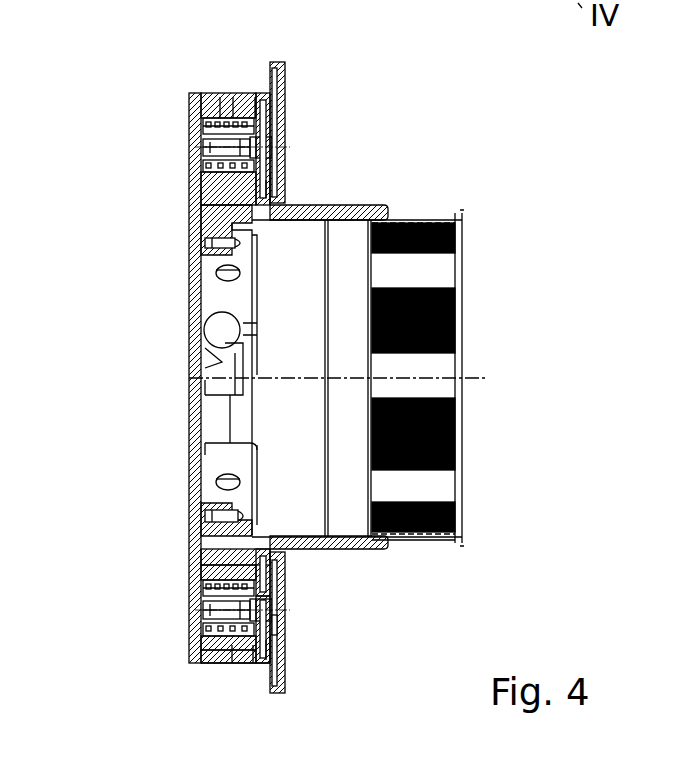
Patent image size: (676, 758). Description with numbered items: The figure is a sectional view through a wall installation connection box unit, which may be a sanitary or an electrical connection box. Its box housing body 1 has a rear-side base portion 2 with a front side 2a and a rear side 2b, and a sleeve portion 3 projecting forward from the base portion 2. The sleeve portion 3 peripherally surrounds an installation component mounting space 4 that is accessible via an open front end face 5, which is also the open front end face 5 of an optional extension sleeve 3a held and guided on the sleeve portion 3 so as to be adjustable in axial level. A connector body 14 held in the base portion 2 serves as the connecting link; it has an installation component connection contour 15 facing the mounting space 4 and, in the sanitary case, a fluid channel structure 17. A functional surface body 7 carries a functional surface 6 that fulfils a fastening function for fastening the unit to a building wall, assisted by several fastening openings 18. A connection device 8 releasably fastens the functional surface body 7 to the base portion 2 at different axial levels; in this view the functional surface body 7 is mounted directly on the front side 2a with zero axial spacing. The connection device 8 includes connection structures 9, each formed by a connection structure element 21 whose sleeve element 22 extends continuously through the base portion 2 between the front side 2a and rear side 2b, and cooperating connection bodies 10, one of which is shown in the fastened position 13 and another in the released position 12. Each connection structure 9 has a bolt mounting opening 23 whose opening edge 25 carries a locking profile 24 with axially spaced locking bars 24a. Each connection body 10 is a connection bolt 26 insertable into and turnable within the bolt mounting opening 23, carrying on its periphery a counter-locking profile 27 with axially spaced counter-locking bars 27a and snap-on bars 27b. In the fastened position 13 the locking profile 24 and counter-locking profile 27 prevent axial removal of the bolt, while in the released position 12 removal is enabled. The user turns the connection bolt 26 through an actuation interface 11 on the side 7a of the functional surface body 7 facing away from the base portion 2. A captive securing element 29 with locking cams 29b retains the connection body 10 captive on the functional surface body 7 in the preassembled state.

The box housing body 1 is at (272, 205).
The base portion 2 is at (190, 97).
The front side 2a is at (283, 650).
The rear side 2b is at (195, 652).
The sleeve portion 3 is at (378, 205).
The extension sleeve 3a is at (423, 537).
The installation component mounting space 4 is at (308, 393).
The open front end face 5 is at (463, 218).
The functional surface 6 is at (287, 100).
The functional surface body 7 is at (283, 655).
The side 7a is at (283, 177).
The connection device 8 is at (197, 180).
The connection structure 9 is at (151, 352).
The connection body 10 is at (230, 378).
The actuation interface 11 is at (282, 138).
The released position 12 is at (205, 665).
The fastened position 13 is at (220, 97).
The connector body 14 is at (213, 222).
The installation component connection contour 15 is at (215, 293).
The fluid channel structure 17 is at (240, 323).
The fastening openings 18 is at (287, 75).
The connection structure element 21 is at (151, 352).
The sleeve element 22 is at (192, 118).
The bolt mounting opening 23 is at (255, 97).
The locking profile 24 is at (156, 365).
The locking bars 24a is at (195, 150).
The opening edge 25 is at (217, 573).
The connection bolt 26 is at (233, 97).
The counter-locking profile 27 is at (169, 363).
The counter-locking bars 27a is at (200, 97).
The snap-on bar 27b is at (195, 663).
The captive securing element 29 is at (190, 577).
The locking cam 29b is at (283, 578).